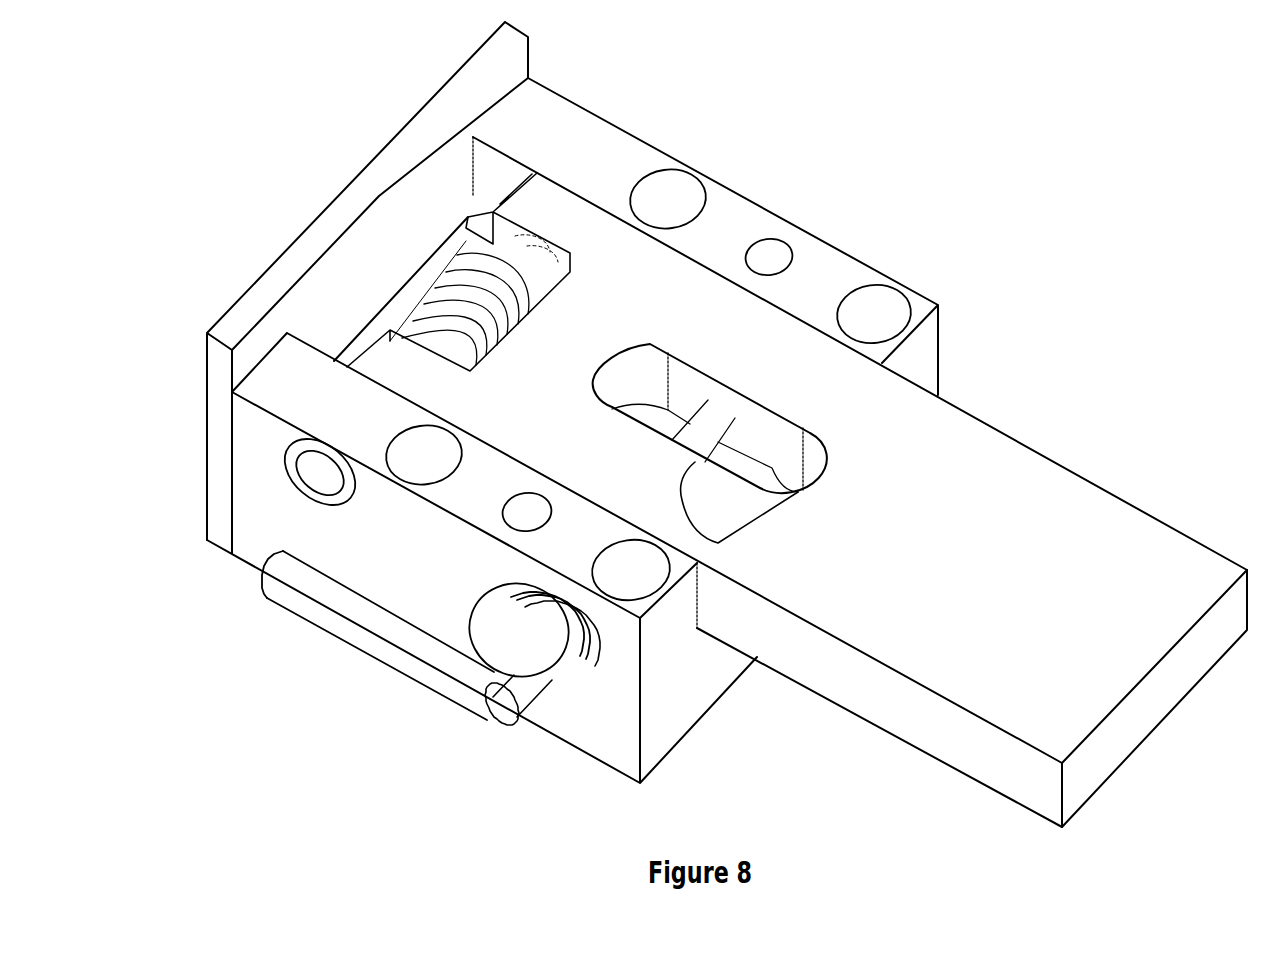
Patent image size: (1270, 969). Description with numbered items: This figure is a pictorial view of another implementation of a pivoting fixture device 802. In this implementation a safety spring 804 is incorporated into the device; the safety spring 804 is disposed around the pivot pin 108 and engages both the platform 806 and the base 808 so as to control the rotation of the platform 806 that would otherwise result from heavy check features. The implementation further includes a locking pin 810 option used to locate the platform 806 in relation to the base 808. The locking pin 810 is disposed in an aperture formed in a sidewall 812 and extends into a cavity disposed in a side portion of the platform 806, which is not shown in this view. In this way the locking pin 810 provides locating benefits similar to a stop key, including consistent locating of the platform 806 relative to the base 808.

The pivoting fixture device 802 is at (688, 91).
The safety spring 804 is at (445, 288).
The platform 806 is at (1103, 527).
The base 808 is at (522, 706).
The locking pin 810 is at (498, 647).
The sidewall 812 is at (625, 655).
The pivot pin 108 is at (316, 477).